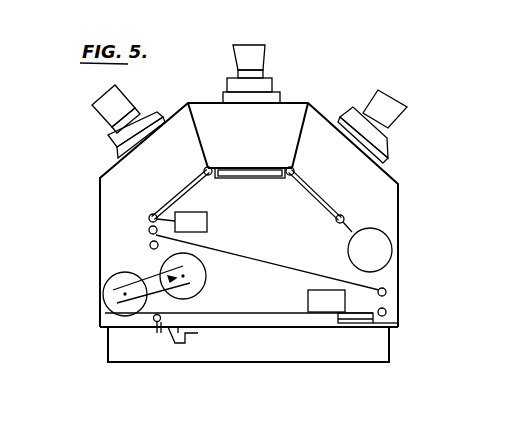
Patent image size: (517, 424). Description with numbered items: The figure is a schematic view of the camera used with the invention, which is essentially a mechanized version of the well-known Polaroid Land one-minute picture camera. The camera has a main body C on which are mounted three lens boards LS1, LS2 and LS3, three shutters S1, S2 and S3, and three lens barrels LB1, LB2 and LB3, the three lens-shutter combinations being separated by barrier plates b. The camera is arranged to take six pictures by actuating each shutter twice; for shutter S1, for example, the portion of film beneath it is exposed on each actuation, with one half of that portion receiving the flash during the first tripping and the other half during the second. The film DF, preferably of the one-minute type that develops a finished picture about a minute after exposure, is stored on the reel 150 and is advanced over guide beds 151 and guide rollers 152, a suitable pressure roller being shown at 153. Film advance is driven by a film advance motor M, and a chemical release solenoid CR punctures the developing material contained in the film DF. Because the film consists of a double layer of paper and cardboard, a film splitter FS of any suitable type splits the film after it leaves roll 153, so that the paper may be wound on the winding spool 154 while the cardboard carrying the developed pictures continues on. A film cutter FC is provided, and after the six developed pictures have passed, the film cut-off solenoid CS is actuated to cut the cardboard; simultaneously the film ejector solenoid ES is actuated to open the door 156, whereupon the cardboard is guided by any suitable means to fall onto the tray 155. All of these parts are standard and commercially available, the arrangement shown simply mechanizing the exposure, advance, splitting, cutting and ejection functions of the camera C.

The main body C is at (380, 192).
The tray 155 is at (262, 356).
The winding spool 154 is at (216, 330).
The lens board LS1 is at (120, 153).
The shutter S1 is at (118, 138).
The lens barrel LB1 is at (100, 100).
The lens board LS2 is at (230, 98).
The shutter S2 is at (263, 87).
The lens barrel LB2 is at (252, 52).
The lens board LS3 is at (382, 155).
The shutter S3 is at (352, 112).
The lens barrel LB3 is at (385, 102).
The barrier plates b is at (202, 148).
The guide rollers 152 is at (215, 176).
The guide beds 151 is at (314, 198).
The pressure roller 153 is at (151, 247).
The reel 150 is at (381, 233).
The film DF is at (285, 268).
The chemical release solenoid CR is at (207, 222).
The film advance motor M is at (117, 292).
The film cut-off solenoid CS is at (320, 300).
The film cutter FC is at (352, 325).
The film splitter FS is at (154, 320).
The door 156 is at (160, 334).
The film ejector solenoid ES is at (190, 334).